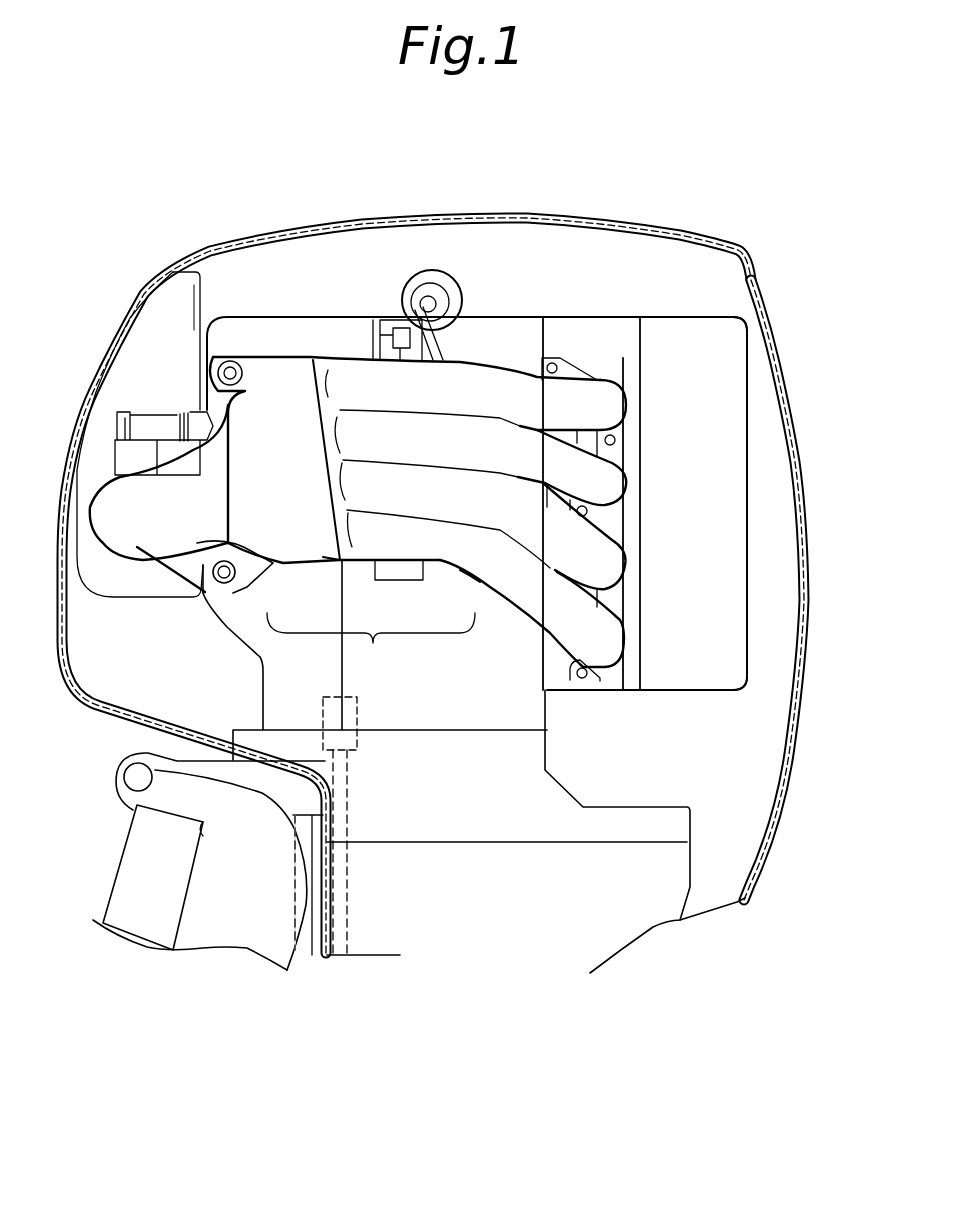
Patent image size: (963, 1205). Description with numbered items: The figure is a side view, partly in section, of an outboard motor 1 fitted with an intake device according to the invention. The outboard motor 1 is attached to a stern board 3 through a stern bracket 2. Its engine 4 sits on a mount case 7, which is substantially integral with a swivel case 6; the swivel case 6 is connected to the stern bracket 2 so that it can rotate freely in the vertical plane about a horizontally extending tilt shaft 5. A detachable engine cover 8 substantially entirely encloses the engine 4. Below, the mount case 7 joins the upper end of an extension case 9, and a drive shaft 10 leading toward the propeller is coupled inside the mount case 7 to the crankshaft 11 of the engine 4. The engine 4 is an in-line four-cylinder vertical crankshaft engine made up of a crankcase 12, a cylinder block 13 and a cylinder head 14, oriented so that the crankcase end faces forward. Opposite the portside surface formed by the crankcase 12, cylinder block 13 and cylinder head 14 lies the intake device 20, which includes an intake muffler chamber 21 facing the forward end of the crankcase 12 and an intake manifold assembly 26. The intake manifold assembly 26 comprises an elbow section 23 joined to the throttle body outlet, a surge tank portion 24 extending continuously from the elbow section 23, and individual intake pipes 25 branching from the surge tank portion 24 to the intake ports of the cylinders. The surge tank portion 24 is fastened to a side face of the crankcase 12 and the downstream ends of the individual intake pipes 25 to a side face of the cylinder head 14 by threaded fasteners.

The outboard motor 1 is at (646, 212).
The stern bracket 2 is at (217, 947).
The stern board 3 is at (127, 927).
The engine 4 is at (548, 305).
The tilt shaft 5 is at (125, 775).
The swivel case 6 is at (220, 767).
The mount case 7 is at (560, 793).
The engine cover 8 is at (813, 510).
The extension case 9 is at (677, 897).
The drive shaft 10 is at (352, 917).
The crankshaft 11 is at (360, 715).
The crankcase 12 is at (318, 322).
The cylinder block 13 is at (492, 323).
The cylinder head 14 is at (595, 323).
The intake device 20 is at (353, 400).
The intake muffler chamber 21 is at (132, 353).
The elbow section 23 is at (130, 547).
The surge tank portion 24 is at (323, 560).
The individual intake pipes 25 is at (473, 567).
The intake manifold assembly 26 is at (371, 652).